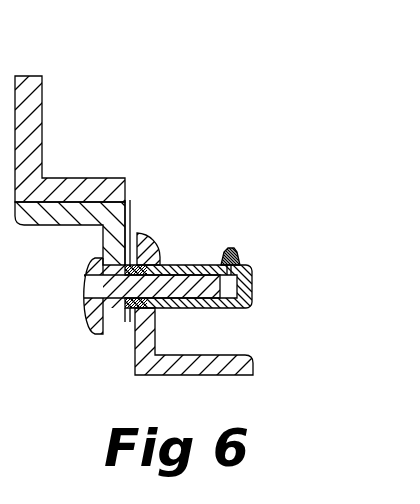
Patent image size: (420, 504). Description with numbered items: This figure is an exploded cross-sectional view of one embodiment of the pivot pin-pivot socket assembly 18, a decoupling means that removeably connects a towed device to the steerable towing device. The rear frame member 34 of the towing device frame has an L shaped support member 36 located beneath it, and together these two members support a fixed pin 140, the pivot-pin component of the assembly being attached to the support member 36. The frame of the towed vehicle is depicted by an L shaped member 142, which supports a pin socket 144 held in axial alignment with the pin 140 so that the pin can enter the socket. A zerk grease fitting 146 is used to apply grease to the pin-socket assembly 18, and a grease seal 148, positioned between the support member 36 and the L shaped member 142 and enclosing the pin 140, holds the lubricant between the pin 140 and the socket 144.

The pivot pin-pivot socket assembly 18 is at (207, 220).
The rear frame member 34 is at (43, 108).
The L shaped support member 36 is at (42, 226).
The fixed pin 140 is at (85, 291).
The L shaped member 142 is at (162, 235).
The pin socket 144 is at (235, 310).
The zerk grease fitting 146 is at (232, 249).
The grease seal 148 is at (130, 205).